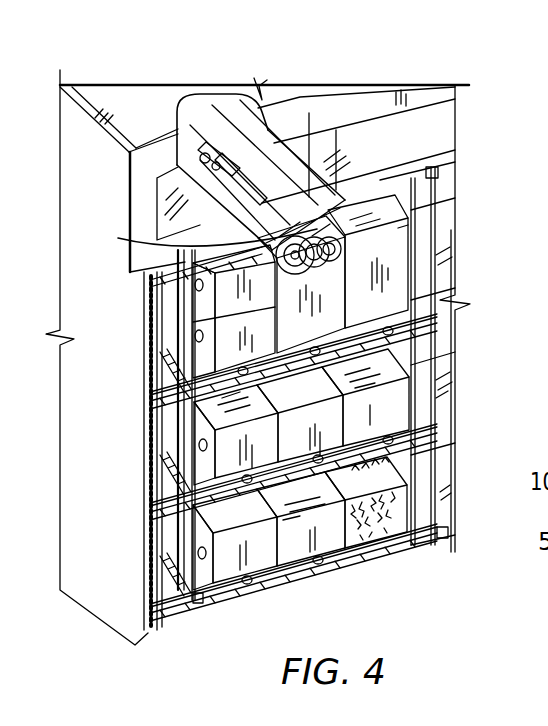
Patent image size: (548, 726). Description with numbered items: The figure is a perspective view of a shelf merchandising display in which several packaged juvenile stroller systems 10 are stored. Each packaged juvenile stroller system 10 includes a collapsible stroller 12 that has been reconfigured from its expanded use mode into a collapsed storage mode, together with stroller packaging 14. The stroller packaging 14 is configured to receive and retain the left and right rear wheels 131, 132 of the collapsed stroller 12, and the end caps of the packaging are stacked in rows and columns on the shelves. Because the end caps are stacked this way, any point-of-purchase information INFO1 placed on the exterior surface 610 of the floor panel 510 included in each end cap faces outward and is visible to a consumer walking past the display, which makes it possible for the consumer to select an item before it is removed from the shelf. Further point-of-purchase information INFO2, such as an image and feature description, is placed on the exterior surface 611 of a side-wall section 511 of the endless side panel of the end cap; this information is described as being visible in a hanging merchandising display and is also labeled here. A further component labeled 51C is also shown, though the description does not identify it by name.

The packaged juvenile stroller system 10 is at (316, 88).
The collapsible stroller 12 is at (300, 178).
The stroller packaging 14 is at (132, 240).
The robot picker arm 51C is at (337, 190).
The floor panel 510 is at (372, 258).
The side-wall section 511 is at (379, 205).
The exterior surface of floor panel 610 is at (312, 283).
The exterior surface of side-wall section 611 is at (398, 226).
The left rear wheel 131 is at (421, 350).
The right rear wheel 132 is at (437, 319).
The point-of-purchase information INFO1 is at (395, 408).
The point-of-purchase information INFO2 is at (207, 345).